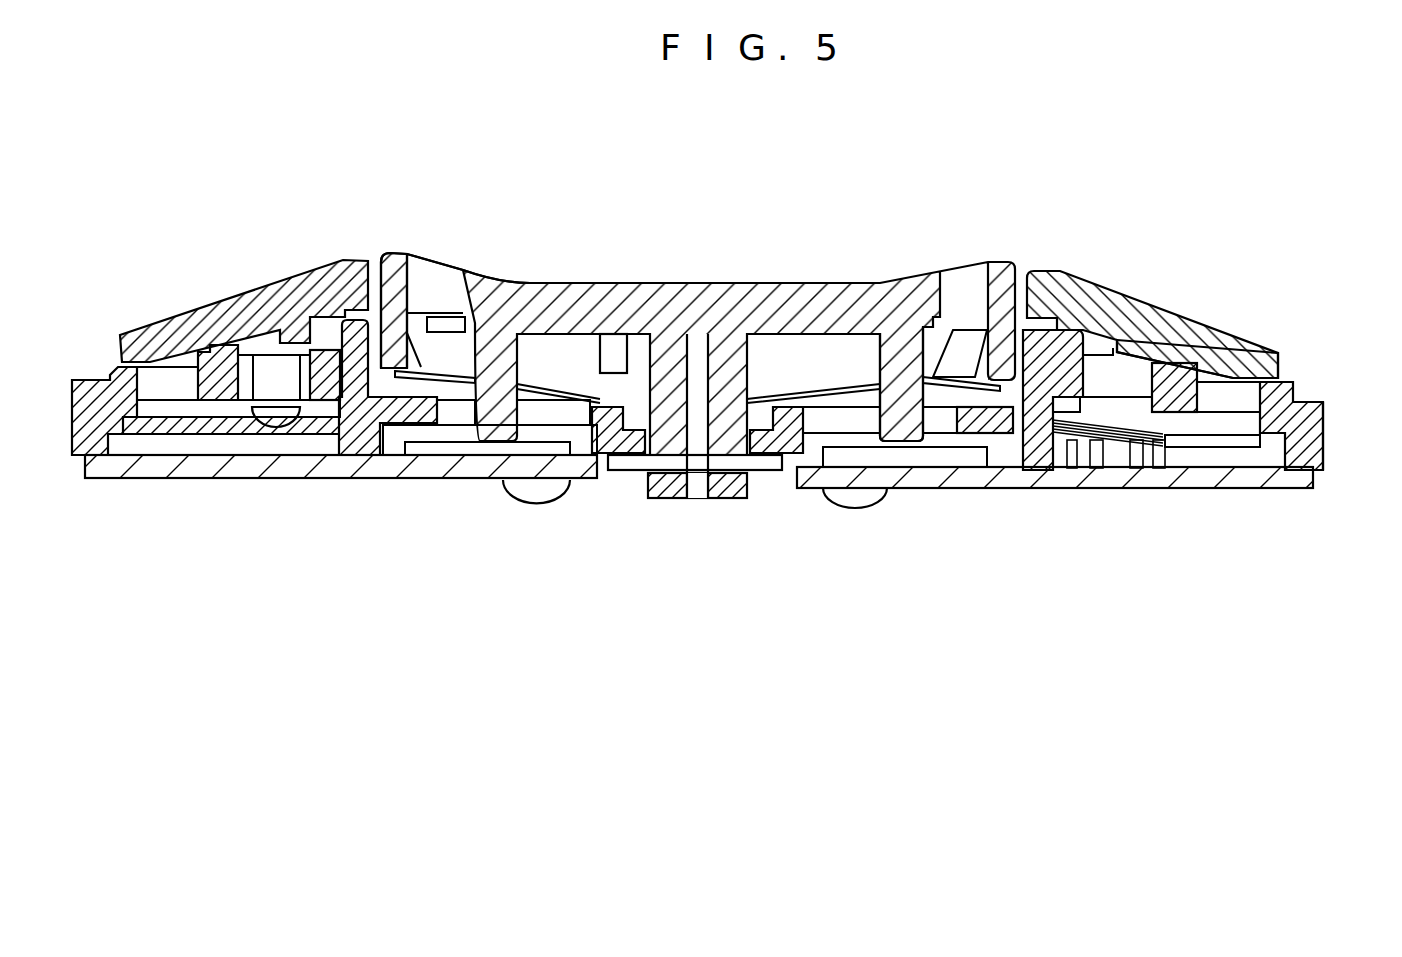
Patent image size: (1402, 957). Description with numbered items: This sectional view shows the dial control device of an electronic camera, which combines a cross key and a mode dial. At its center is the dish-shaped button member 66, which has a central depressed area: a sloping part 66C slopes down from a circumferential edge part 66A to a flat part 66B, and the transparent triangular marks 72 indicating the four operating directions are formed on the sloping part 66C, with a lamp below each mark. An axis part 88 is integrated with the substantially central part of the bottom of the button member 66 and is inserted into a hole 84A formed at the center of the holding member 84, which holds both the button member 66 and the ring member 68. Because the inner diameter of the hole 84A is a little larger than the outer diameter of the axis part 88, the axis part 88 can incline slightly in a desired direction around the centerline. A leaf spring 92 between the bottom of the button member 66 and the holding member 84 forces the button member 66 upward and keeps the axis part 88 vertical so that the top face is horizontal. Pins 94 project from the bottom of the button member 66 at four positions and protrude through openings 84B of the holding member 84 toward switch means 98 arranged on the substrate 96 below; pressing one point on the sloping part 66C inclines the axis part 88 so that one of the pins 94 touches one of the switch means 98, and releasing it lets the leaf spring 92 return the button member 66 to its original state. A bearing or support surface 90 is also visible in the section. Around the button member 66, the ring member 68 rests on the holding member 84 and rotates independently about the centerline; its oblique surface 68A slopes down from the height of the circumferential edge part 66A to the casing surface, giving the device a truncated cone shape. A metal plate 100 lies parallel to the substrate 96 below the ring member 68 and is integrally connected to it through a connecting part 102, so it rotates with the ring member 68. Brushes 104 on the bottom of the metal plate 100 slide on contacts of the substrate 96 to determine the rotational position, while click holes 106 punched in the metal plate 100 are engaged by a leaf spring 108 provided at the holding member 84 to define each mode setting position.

The button member 66 is at (648, 280).
The circumferential edge part 66A is at (396, 253).
The flat part 66B is at (790, 283).
The sloping part 66C is at (482, 272).
The ring member 68 is at (1103, 300).
The oblique surface 68A is at (1216, 322).
The triangular marks 72 is at (963, 290).
The holding member 84 is at (1325, 425).
The hole 84A is at (738, 442).
The openings 84B is at (430, 424).
The axis part 88 is at (725, 446).
The bearing 90 is at (628, 447).
The leaf spring 92 is at (462, 402).
The pins 94 is at (557, 452).
The substrate 96 is at (1258, 480).
The switch means 98 is at (498, 444).
The metal plate 100 is at (167, 432).
The connecting part 102 is at (282, 338).
The brushes 104 is at (1096, 458).
The click holes 106 is at (270, 420).
The leaf spring 108 is at (257, 437).